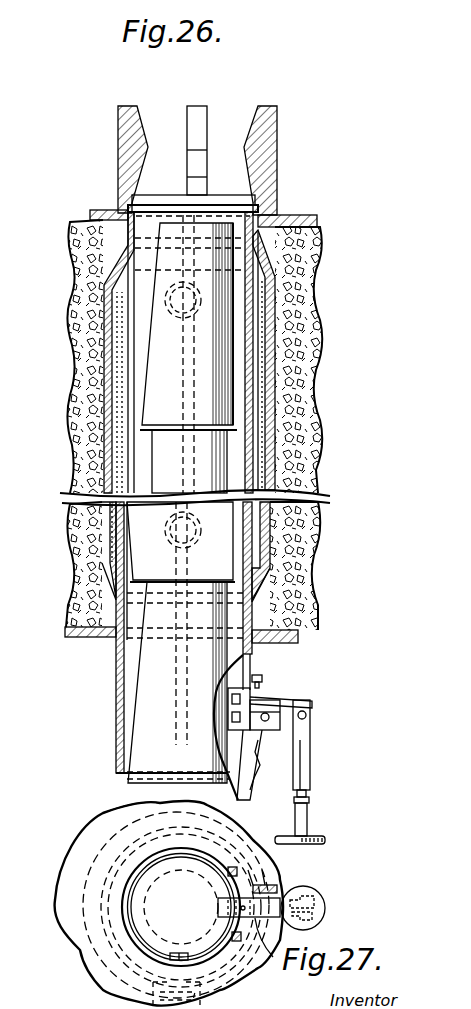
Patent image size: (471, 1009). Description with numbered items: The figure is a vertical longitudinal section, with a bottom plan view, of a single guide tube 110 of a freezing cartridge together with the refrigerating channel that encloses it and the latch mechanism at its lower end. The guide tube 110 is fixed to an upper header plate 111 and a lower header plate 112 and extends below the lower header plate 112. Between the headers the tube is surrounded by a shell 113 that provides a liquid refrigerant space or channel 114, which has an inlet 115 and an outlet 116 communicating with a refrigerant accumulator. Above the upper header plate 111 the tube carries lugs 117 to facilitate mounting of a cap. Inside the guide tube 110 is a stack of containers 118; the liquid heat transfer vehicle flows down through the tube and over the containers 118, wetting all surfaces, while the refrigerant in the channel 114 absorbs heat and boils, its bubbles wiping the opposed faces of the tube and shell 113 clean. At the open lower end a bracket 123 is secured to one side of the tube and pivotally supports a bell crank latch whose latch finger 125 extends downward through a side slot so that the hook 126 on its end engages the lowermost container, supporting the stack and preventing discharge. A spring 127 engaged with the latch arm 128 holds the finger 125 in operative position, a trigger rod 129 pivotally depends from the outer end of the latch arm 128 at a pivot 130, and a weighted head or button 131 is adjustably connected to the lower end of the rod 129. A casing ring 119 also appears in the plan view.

In FIG. 26, the guide tube 110 is at (104, 338).
In FIG. 27, the guide tube 110 is at (118, 878).
In FIG. 26, the upper header plate 111 is at (98, 212).
In FIG. 26, the lower header plate 112 is at (92, 638).
In FIG. 27, the lower header plate 112 is at (113, 828).
In FIG. 26, the shell 113 is at (163, 398).
In FIG. 27, the shell 113 is at (74, 946).
In FIG. 26, the liquid refrigerant space or channel 114 is at (118, 382).
In FIG. 26, the inlet 115 is at (78, 544).
In FIG. 27, the inlet 115 is at (92, 986).
In FIG. 26, the outlet 116 is at (172, 300).
In FIG. 26, the lugs 117 is at (276, 138).
In FIG. 26, the stacked containers 118 is at (162, 467).
In FIG. 27, the stacked containers 118 is at (150, 872).
In FIG. 27, the casing ring 119 is at (124, 902).
In FIG. 27, the bracket 123 is at (262, 890).
In FIG. 26, the latch finger 125 is at (260, 765).
In FIG. 27, the latch finger 125 is at (275, 954).
In FIG. 26, the hook 126 is at (222, 790).
In FIG. 27, the hook 126 is at (218, 906).
In FIG. 26, the spring 127 is at (270, 702).
In FIG. 26, the latch arm 128 is at (283, 701).
In FIG. 26, the trigger rod 129 is at (310, 748).
In FIG. 27, the trigger rod 129 is at (322, 906).
In FIG. 26, the pivot 130 is at (307, 714).
In FIG. 27, the pivot 130 is at (324, 917).
In FIG. 26, the weighted head or button 131 is at (302, 824).
In FIG. 27, the weighted head or button 131 is at (306, 898).